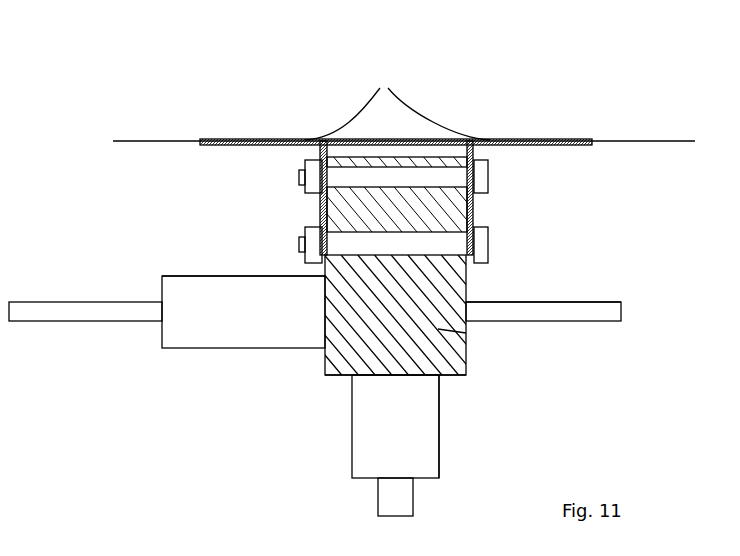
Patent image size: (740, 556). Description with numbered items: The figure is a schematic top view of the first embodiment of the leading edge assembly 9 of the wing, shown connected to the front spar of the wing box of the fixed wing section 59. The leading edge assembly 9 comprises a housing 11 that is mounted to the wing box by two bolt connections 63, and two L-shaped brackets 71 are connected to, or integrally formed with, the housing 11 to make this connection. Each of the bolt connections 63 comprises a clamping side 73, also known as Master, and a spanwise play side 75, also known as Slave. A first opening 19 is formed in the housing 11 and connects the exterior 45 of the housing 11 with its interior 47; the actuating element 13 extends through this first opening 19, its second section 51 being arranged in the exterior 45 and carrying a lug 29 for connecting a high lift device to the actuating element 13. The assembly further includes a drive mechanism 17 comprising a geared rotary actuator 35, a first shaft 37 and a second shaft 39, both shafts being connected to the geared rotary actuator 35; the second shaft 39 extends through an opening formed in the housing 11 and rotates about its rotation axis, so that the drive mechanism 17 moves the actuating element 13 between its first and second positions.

The leading edge assembly 9 is at (638, 306).
The housing 11 is at (452, 355).
The actuating element 13 is at (425, 423).
The drive mechanism 17 is at (210, 328).
The first opening 19 is at (335, 388).
The lug 29 is at (400, 503).
The geared rotary actuator 35 is at (195, 286).
The first shaft 37 is at (95, 307).
The second shaft 39 is at (585, 311).
The exterior 45 is at (94, 202).
The interior 47 is at (438, 329).
The second section 51 is at (425, 452).
The fixed wing section 59 is at (625, 138).
The bolt connections 63 is at (505, 173).
The brackets 71 is at (397, 102).
The clamping side 73 is at (480, 201).
The spanwise play side 75 is at (302, 189).